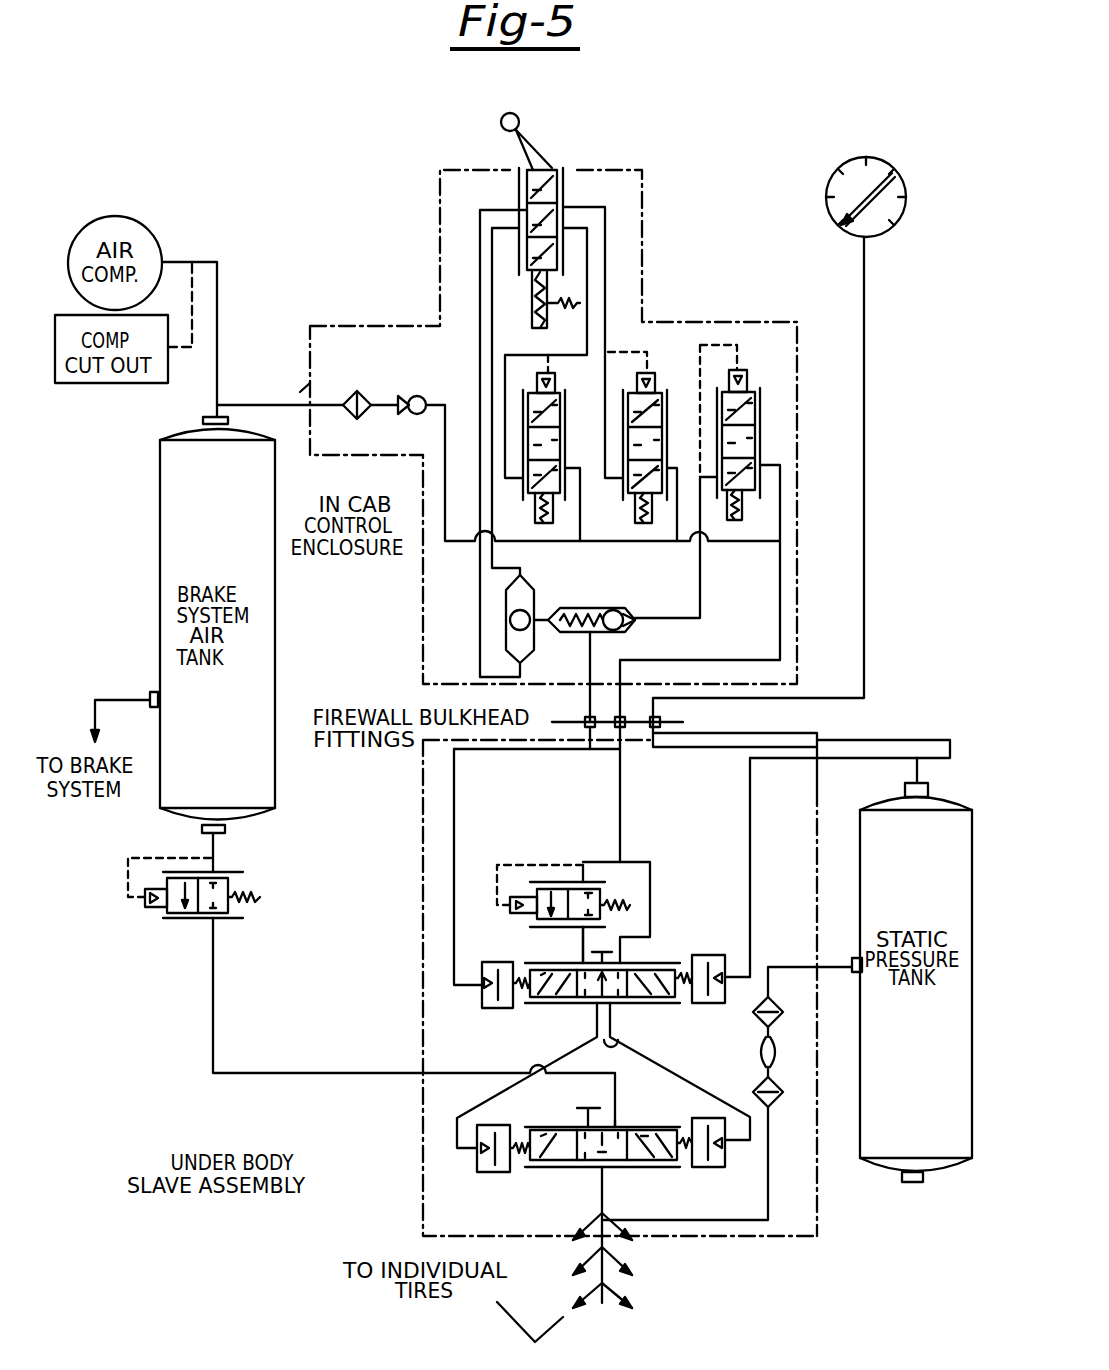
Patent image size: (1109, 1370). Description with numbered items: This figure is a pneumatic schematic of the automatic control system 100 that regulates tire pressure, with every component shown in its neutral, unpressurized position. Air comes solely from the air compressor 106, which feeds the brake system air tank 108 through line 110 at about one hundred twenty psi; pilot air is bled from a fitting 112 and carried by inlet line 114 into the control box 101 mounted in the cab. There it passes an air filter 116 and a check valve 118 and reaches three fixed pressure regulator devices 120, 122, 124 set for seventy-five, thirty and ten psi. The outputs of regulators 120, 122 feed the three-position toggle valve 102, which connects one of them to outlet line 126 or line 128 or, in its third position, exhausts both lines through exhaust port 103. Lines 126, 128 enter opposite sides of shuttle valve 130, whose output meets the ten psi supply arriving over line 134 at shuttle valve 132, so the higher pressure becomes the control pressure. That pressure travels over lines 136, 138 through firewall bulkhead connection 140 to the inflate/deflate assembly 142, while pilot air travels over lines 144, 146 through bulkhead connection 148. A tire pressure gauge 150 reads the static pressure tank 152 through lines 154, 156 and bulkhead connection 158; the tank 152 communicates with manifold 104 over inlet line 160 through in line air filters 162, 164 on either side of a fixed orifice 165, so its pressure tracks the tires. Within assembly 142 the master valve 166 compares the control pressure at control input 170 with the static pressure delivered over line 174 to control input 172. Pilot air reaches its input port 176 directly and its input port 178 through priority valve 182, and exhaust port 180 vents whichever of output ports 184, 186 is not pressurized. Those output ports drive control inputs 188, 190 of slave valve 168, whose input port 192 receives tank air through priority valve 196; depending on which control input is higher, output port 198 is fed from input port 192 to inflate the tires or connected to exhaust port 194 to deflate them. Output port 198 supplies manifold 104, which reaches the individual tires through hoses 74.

The hoses 74 is at (598, 1283).
The automatic control system 100 is at (910, 485).
The control box 101 is at (680, 322).
The toggle valve 102 is at (543, 152).
The exhaust port 103 is at (568, 213).
The manifold 104 is at (606, 1284).
The air compressor 106 is at (146, 240).
The air tank 108 is at (272, 698).
The line 110 is at (222, 298).
The fitting 112 is at (221, 404).
The inlet line 114 is at (310, 381).
The air filter 116 is at (365, 392).
The check valve 118 is at (407, 417).
The pressure regulator device 120 is at (573, 415).
The pressure regulator device 122 is at (678, 405).
The pressure regulator 124 is at (760, 410).
The outlet line 126 is at (503, 563).
The line 128 is at (478, 628).
The shuttle valve 130 is at (528, 597).
The shuttle valve 132 is at (597, 603).
The line 134 is at (705, 580).
The line 136 is at (600, 660).
The line 138 is at (460, 818).
The firewall bulkhead connection 140 is at (584, 730).
The inflate/deflate assembly 142 is at (420, 900).
The line 144 is at (677, 660).
The line 146 is at (630, 784).
The bulkhead connection 148 is at (617, 729).
The tire pressure gauge 150 is at (910, 203).
The static pressure tank 152 is at (957, 1076).
The line 154 is at (864, 597).
The line 156 is at (867, 737).
The bulkhead connection 158 is at (662, 712).
The inlet line 160 is at (742, 1228).
The in line air filter 162 is at (777, 1081).
The in line air filter 164 is at (773, 1002).
The fixed orifice 165 is at (780, 1048).
The master valve 166 is at (668, 948).
The slave valve 168 is at (639, 1118).
The control input 170 is at (482, 1008).
The control input 172 is at (707, 1007).
The line 174 is at (751, 850).
The input port 176 is at (627, 952).
The input port 178 is at (583, 960).
The exhaust port 180 is at (603, 947).
The priority valve 182 is at (540, 872).
The output port 184 is at (596, 1012).
The output port 186 is at (613, 1018).
The control input 188 is at (717, 1166).
The control input 190 is at (480, 1168).
The input port 192 is at (617, 1122).
The exhaust port 194 is at (588, 1105).
The priority valve 196 is at (240, 868).
The output port 198 is at (600, 1176).